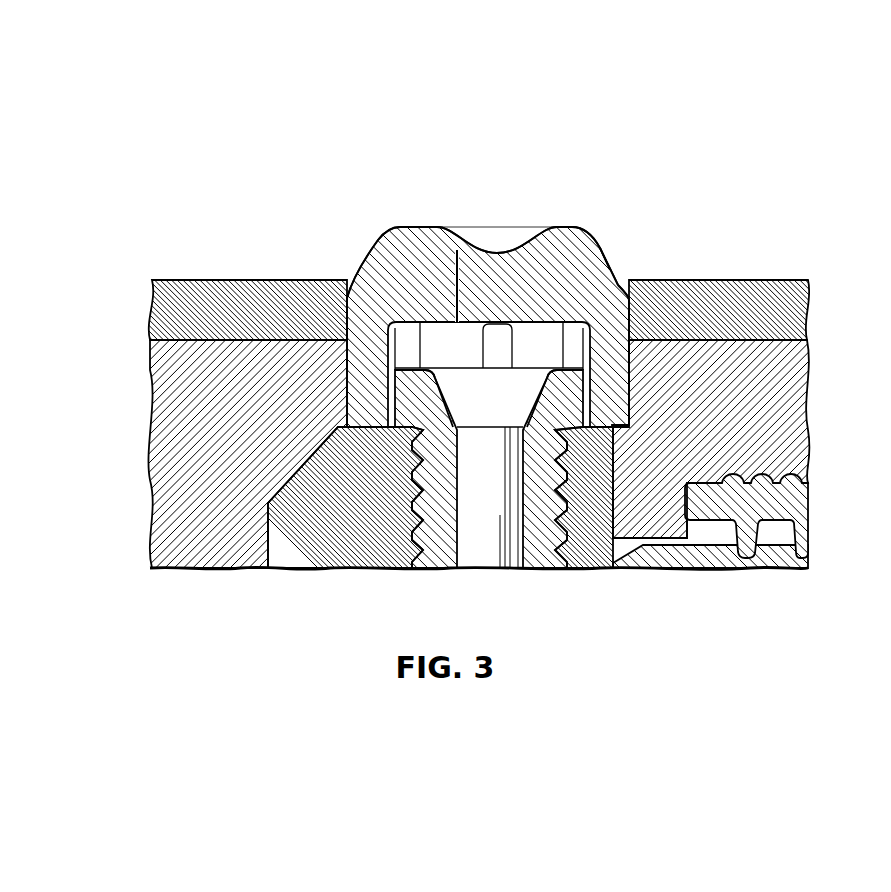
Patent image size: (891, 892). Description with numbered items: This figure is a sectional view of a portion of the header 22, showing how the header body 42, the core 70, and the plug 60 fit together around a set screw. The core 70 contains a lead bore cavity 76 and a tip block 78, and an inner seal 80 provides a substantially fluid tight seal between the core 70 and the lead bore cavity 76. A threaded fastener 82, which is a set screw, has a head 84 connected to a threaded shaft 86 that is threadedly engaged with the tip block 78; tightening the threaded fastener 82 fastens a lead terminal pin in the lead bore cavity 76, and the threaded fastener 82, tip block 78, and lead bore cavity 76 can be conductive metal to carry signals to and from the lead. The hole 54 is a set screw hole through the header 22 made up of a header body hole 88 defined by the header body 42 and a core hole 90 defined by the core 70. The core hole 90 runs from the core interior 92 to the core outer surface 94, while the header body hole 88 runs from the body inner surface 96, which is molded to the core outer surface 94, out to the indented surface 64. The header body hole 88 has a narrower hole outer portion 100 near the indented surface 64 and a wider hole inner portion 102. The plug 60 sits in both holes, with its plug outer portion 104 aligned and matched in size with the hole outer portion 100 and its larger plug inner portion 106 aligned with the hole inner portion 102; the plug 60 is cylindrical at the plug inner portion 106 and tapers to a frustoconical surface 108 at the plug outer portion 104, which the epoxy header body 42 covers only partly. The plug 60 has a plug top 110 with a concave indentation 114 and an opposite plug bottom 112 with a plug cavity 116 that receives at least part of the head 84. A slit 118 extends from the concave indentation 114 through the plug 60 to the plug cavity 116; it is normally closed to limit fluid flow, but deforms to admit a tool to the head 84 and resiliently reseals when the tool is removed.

The header 22 is at (745, 132).
The header body 42 is at (172, 312).
The hole 54 is at (350, 312).
The plug 60 is at (390, 233).
The indented surface 64 is at (168, 280).
The core 70 is at (182, 508).
The lead bore cavity 76 is at (780, 548).
The tip block 78 is at (312, 552).
The inner seal 80 is at (785, 503).
The threaded fastener 82 is at (483, 545).
The head 84 is at (417, 427).
The threaded shaft 86 is at (418, 507).
The header body hole 88 is at (375, 262).
The core hole 90 is at (355, 375).
The core interior 92 is at (673, 540).
The core outer surface 94 is at (200, 338).
The body inner surface 96 is at (200, 345).
The hole outer portion 100 is at (607, 283).
The hole inner portion 102 is at (628, 313).
The plug outer portion 104 is at (629, 300).
The plug inner portion 106 is at (630, 330).
The frustoconical surface 108 is at (597, 242).
The plug top 110 is at (410, 226).
The plug bottom 112 is at (593, 430).
The concave indentation 114 is at (527, 238).
The plug cavity 116 is at (545, 340).
The slit 118 is at (462, 270).